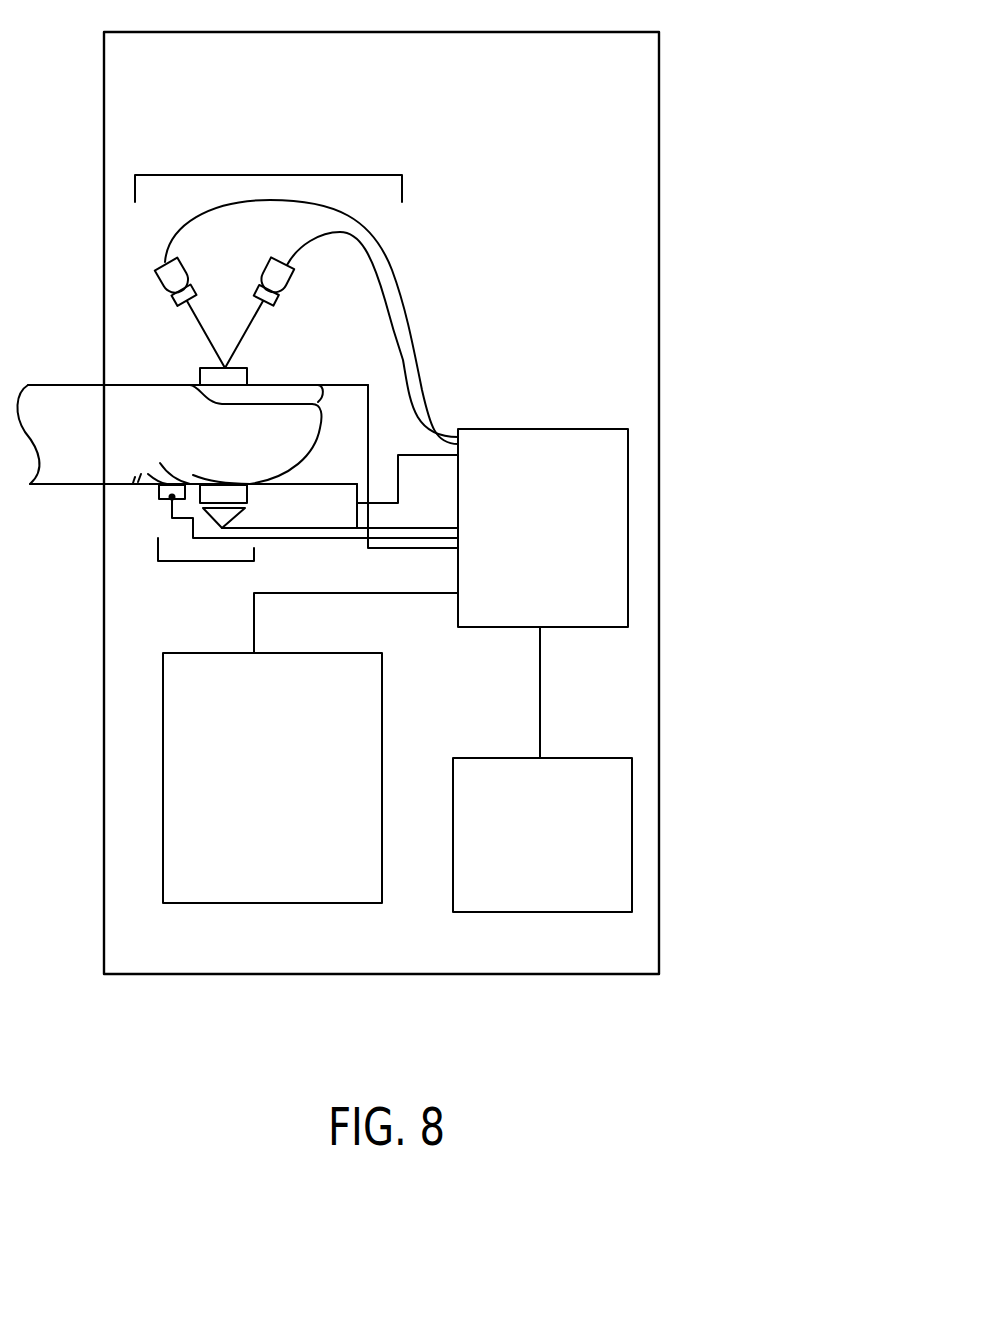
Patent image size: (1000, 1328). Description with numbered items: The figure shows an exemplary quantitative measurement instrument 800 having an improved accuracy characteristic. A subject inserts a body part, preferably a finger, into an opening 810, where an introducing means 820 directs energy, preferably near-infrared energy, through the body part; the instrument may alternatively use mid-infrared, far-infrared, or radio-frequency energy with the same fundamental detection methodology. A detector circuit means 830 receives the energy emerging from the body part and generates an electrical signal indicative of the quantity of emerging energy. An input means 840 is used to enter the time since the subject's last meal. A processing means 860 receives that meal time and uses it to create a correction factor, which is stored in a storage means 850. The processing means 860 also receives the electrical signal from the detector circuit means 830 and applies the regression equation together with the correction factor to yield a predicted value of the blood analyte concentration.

The quantitative measurement instrument 800 is at (707, 1018).
The opening 810 is at (353, 398).
The introducing means 820 is at (248, 175).
The detector circuit means 830 is at (207, 562).
The input means 840 is at (272, 904).
The storage means 850 is at (492, 756).
The processing means 860 is at (557, 428).